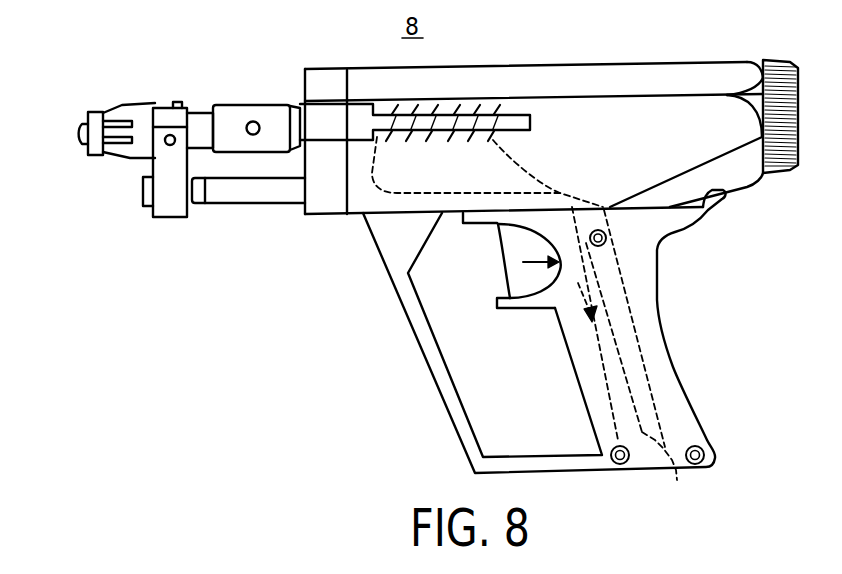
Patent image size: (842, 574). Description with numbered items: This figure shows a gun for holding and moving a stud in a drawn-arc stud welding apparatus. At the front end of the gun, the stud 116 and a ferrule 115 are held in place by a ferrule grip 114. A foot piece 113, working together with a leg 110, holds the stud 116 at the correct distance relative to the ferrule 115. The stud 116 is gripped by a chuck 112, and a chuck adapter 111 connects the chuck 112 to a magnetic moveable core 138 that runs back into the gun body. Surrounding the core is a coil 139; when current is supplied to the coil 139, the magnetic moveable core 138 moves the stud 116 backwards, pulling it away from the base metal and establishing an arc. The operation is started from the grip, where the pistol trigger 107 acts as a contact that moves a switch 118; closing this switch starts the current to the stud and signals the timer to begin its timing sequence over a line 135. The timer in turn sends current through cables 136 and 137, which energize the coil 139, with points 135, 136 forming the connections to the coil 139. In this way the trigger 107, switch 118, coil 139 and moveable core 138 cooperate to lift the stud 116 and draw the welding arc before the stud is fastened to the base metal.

The pistol trigger 107 is at (498, 247).
The leg 110 is at (290, 205).
The chuck adapter 111 is at (240, 103).
The chuck 112 is at (203, 112).
The foot piece 113 is at (173, 219).
The ferrule grip 114 is at (130, 160).
The ferrule 115 is at (97, 156).
The stud 116 is at (80, 133).
The switch 118 is at (587, 274).
The line 135 is at (608, 400).
The cable 136 is at (677, 480).
The cable 137 is at (658, 372).
The magnetic moveable core 138 is at (532, 119).
The coil 139 is at (433, 137).